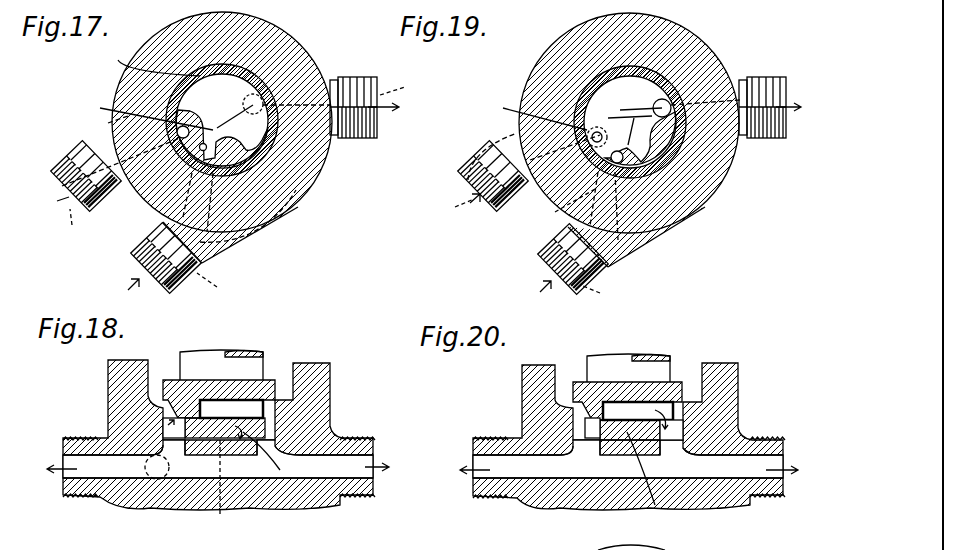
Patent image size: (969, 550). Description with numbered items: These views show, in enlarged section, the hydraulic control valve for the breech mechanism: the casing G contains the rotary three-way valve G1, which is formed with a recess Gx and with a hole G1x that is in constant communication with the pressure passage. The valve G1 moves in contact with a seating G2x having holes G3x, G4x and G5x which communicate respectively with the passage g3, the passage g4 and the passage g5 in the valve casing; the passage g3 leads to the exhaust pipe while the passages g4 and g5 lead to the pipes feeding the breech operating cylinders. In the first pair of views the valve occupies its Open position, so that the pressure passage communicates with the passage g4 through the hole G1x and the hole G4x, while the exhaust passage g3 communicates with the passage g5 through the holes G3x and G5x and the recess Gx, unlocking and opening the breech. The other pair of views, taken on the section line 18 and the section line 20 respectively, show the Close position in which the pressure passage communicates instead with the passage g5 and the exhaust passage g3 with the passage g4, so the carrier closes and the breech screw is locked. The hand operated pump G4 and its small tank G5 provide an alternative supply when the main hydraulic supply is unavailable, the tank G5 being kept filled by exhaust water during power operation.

In FIG. 17, the casing G is at (233, 28).
In FIG. 19, the casing G is at (693, 200).
In FIG. 18, the casing G is at (310, 388).
In FIG. 20, the casing G is at (723, 382).
In FIG. 17, the recess Gx is at (144, 58).
In FIG. 18, the recess Gx is at (207, 388).
In FIG. 20, the recess Gx is at (588, 388).
In FIG. 17, the three-way valve G1 is at (263, 83).
In FIG. 19, the three-way valve G1 is at (606, 78).
In FIG. 18, the three-way valve G1 is at (248, 375).
In FIG. 20, the three-way valve G1 is at (650, 395).
In FIG. 17, the hole G1x is at (137, 139).
In FIG. 19, the hole G1x is at (557, 209).
In FIG. 18, the hole G1x is at (112, 384).
In FIG. 20, the hole G1x is at (580, 418).
In FIG. 17, the seating G2x is at (222, 136).
In FIG. 19, the seating G2x is at (633, 176).
In FIG. 18, the seating G2x is at (243, 432).
In FIG. 20, the seating G2x is at (644, 483).
In FIG. 17, the hole G3x is at (324, 158).
In FIG. 19, the hole G3x is at (733, 75).
In FIG. 18, the hole G3x is at (270, 418).
In FIG. 20, the hole G3x is at (670, 431).
In FIG. 19, the hand operated pump G4 is at (688, 33).
In FIG. 19, the hole G4x is at (537, 133).
In FIG. 18, the hole G4x is at (173, 423).
In FIG. 18, the tank G5 is at (150, 478).
In FIG. 17, the hole G5x is at (290, 196).
In FIG. 18, the hole G5x is at (227, 495).
In FIG. 17, the passage g3 is at (376, 107).
In FIG. 19, the passage g3 is at (789, 139).
In FIG. 18, the passage g3 is at (374, 485).
In FIG. 20, the passage g3 is at (782, 488).
In FIG. 17, the passage g4 is at (86, 195).
In FIG. 19, the passage g4 is at (484, 187).
In FIG. 18, the passage g4 is at (85, 478).
In FIG. 20, the passage g4 is at (478, 486).
In FIG. 17, the passage g5 is at (184, 262).
In FIG. 19, the passage g5 is at (580, 265).
In FIG. 17, the flow direction arrows 18 is at (229, 195).
In FIG. 19, the flow direction arrows 20 is at (549, 293).